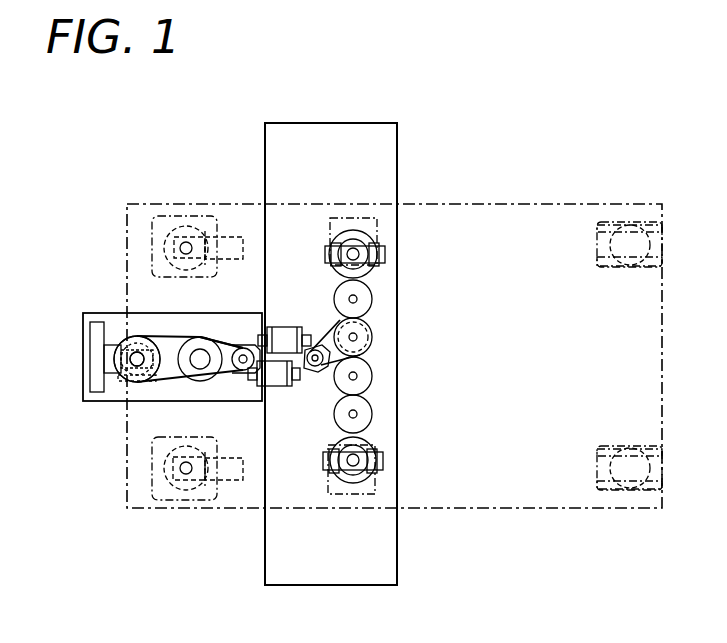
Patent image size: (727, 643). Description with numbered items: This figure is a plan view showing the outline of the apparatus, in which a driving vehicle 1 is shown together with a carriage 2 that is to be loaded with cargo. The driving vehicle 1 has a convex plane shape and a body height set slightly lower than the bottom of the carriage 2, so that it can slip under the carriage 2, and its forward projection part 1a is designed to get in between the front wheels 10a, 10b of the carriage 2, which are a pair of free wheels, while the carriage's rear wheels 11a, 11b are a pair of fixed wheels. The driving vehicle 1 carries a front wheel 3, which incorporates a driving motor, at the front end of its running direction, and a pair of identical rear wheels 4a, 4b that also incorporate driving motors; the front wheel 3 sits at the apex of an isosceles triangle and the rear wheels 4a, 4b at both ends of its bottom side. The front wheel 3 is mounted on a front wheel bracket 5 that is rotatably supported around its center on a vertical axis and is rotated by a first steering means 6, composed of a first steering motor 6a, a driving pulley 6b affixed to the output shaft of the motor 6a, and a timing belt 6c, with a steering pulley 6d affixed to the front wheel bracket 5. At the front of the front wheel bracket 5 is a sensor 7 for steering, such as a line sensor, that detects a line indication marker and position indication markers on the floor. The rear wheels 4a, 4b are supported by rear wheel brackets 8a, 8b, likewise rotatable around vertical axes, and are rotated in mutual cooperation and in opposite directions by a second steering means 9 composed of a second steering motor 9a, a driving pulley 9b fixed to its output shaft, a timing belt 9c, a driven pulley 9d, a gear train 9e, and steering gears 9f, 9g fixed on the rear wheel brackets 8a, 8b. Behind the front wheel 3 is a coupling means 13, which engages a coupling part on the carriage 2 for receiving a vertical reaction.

The driving vehicle 1 is at (400, 152).
The forward projection part 1a is at (84, 396).
The carriage 2 is at (475, 508).
The front wheel 3 is at (122, 340).
The rear wheel 4a is at (387, 255).
The rear wheel 4b is at (385, 460).
The front wheel bracket 5 is at (143, 342).
The first steering means 6 is at (170, 388).
The first steering motor 6a is at (262, 384).
The driving pulley 6b is at (234, 373).
The timing belt 6c is at (173, 382).
The steering pulley 6d is at (119, 378).
The sensor 7 is at (92, 337).
The rear wheel bracket 8a is at (362, 232).
The rear wheel bracket 8b is at (365, 446).
The second steering means 9 is at (375, 365).
The second steering motor 9a is at (281, 327).
The driving pulley 9b is at (314, 370).
The timing belt 9c is at (332, 336).
The driven pulley 9d is at (372, 330).
The gear train 9e is at (365, 300).
The steering gear 9f is at (372, 272).
The steering gear 9g is at (368, 478).
The front wheel 10a is at (210, 237).
The front wheel 10b is at (208, 480).
The rear wheel 11a is at (630, 240).
The rear wheel 11b is at (628, 470).
The coupling means 13 is at (205, 335).